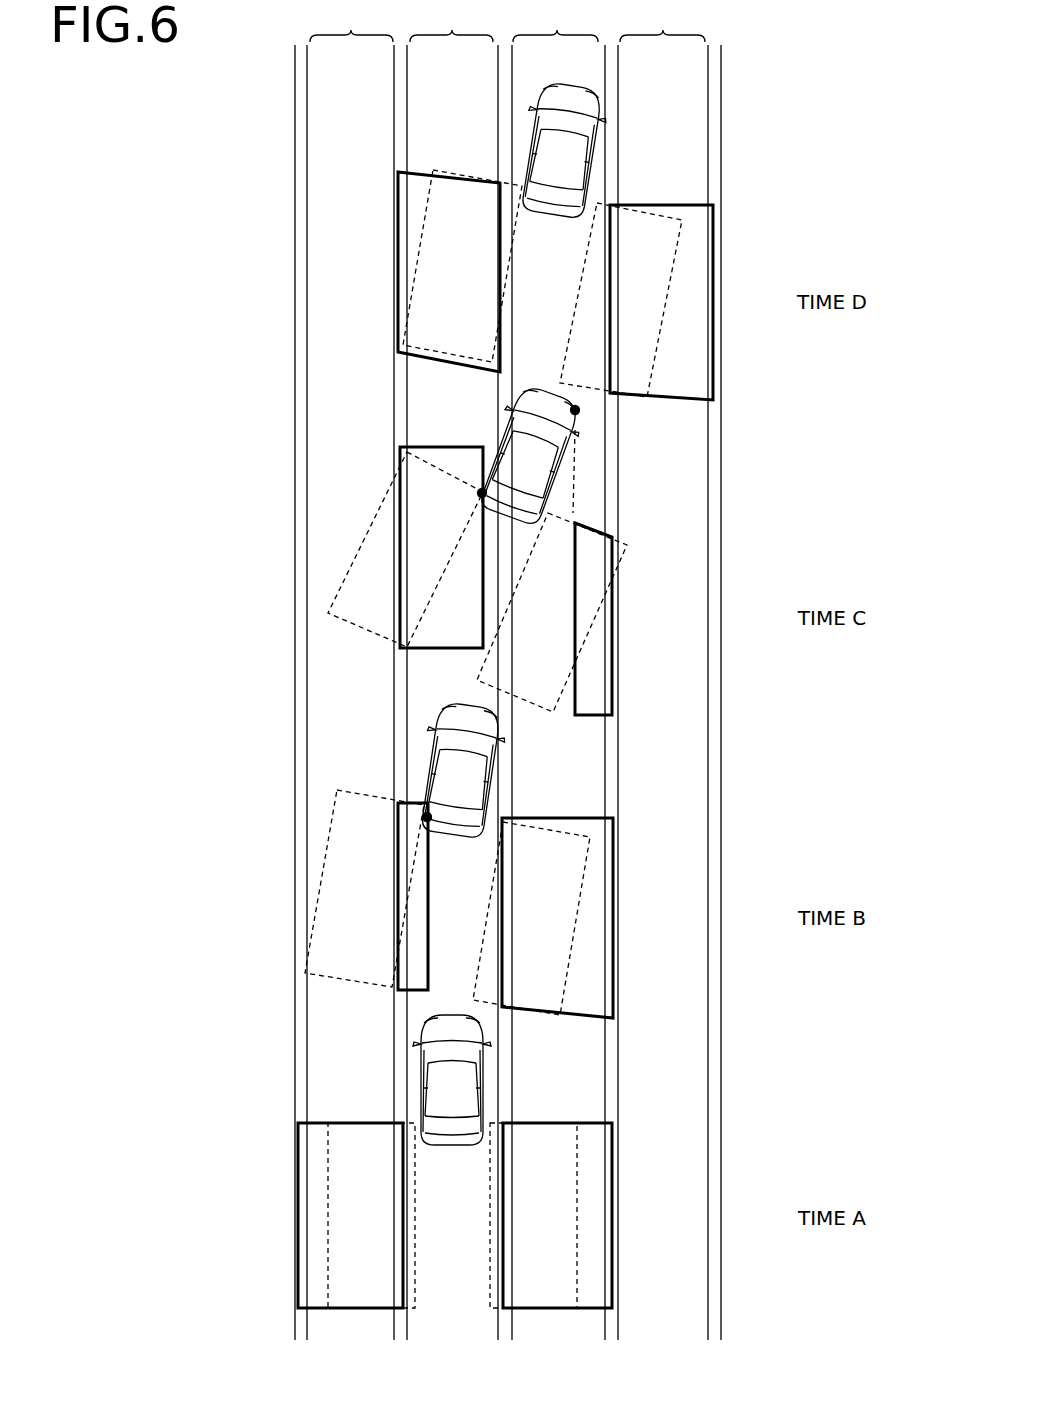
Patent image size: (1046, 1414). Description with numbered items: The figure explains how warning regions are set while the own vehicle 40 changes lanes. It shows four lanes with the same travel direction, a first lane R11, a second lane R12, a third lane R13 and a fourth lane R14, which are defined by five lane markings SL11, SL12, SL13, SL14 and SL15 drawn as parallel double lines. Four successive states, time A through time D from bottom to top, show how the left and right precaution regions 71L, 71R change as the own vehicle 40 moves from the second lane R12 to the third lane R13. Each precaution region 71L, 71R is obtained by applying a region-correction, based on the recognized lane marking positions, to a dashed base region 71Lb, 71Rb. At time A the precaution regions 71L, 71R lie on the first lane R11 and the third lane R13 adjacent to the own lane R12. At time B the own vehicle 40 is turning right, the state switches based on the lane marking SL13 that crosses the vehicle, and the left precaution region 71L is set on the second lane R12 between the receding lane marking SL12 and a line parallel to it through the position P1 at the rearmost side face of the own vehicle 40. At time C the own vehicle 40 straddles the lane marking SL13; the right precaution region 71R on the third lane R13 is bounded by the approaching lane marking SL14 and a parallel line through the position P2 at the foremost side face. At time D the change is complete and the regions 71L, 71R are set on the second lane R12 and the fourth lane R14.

The own vehicle 40 is at (420, 1075).
The precaution region 71L is at (318, 1123).
The base region 71Lb is at (328, 1228).
The precaution region 71R is at (593, 1123).
The base region 71Rb is at (580, 1240).
The position P1 is at (430, 820).
The position P2 is at (580, 412).
The first lane R11 is at (351, 23).
The second lane R12 is at (451, 23).
The third lane R13 is at (555, 23).
The fourth lane R14 is at (662, 23).
The lane marking SL11 is at (293, 1340).
The lane marking SL12 is at (392, 1340).
The lane marking SL13 is at (496, 1340).
The lane marking SL14 is at (603, 1340).
The lane marking SL15 is at (706, 1340).